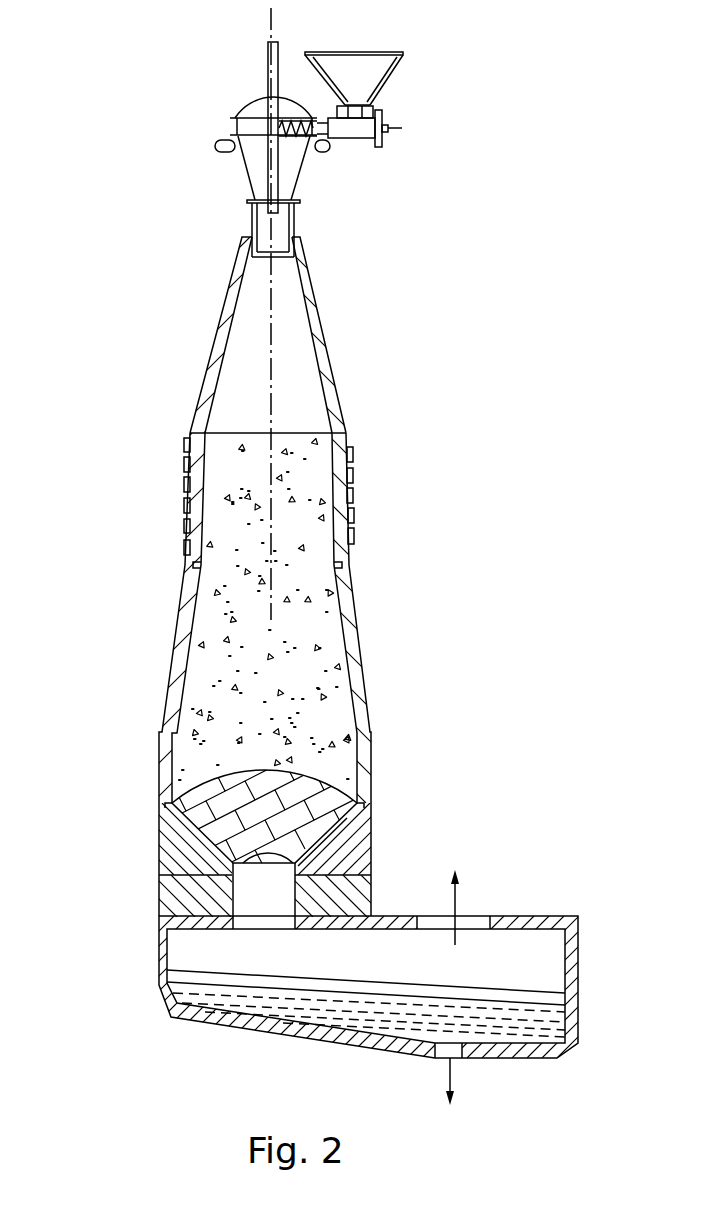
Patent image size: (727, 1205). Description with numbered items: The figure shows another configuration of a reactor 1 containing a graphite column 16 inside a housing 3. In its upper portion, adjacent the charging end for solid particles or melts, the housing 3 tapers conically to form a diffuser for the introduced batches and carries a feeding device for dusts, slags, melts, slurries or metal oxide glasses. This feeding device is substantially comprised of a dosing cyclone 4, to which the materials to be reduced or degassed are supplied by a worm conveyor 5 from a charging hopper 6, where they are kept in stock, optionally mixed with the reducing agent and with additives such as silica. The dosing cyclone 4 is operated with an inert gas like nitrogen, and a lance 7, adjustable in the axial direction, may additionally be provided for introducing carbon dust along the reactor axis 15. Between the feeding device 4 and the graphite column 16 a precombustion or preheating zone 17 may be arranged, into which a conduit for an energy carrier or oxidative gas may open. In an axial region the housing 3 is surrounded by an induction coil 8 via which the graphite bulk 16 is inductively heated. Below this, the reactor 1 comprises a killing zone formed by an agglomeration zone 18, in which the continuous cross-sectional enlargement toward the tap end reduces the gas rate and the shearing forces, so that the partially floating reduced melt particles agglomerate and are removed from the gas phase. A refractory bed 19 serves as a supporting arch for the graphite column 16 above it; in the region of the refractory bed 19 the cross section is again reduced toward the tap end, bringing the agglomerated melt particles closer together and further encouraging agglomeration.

The reactor 1 is at (97, 175).
The housing 3 is at (190, 438).
The dosing cyclone 4 is at (250, 112).
The worm conveyor 5 is at (292, 137).
The charging hopper 6 is at (377, 90).
The lance 7 is at (268, 65).
The induction coil 8 is at (355, 475).
The longitudinal axis 15 is at (270, 308).
The graphite column 16 is at (295, 647).
The precombustion or preheating zone 17 is at (252, 288).
The agglomeration zone 18 is at (317, 717).
The refractory bed 19 is at (217, 815).